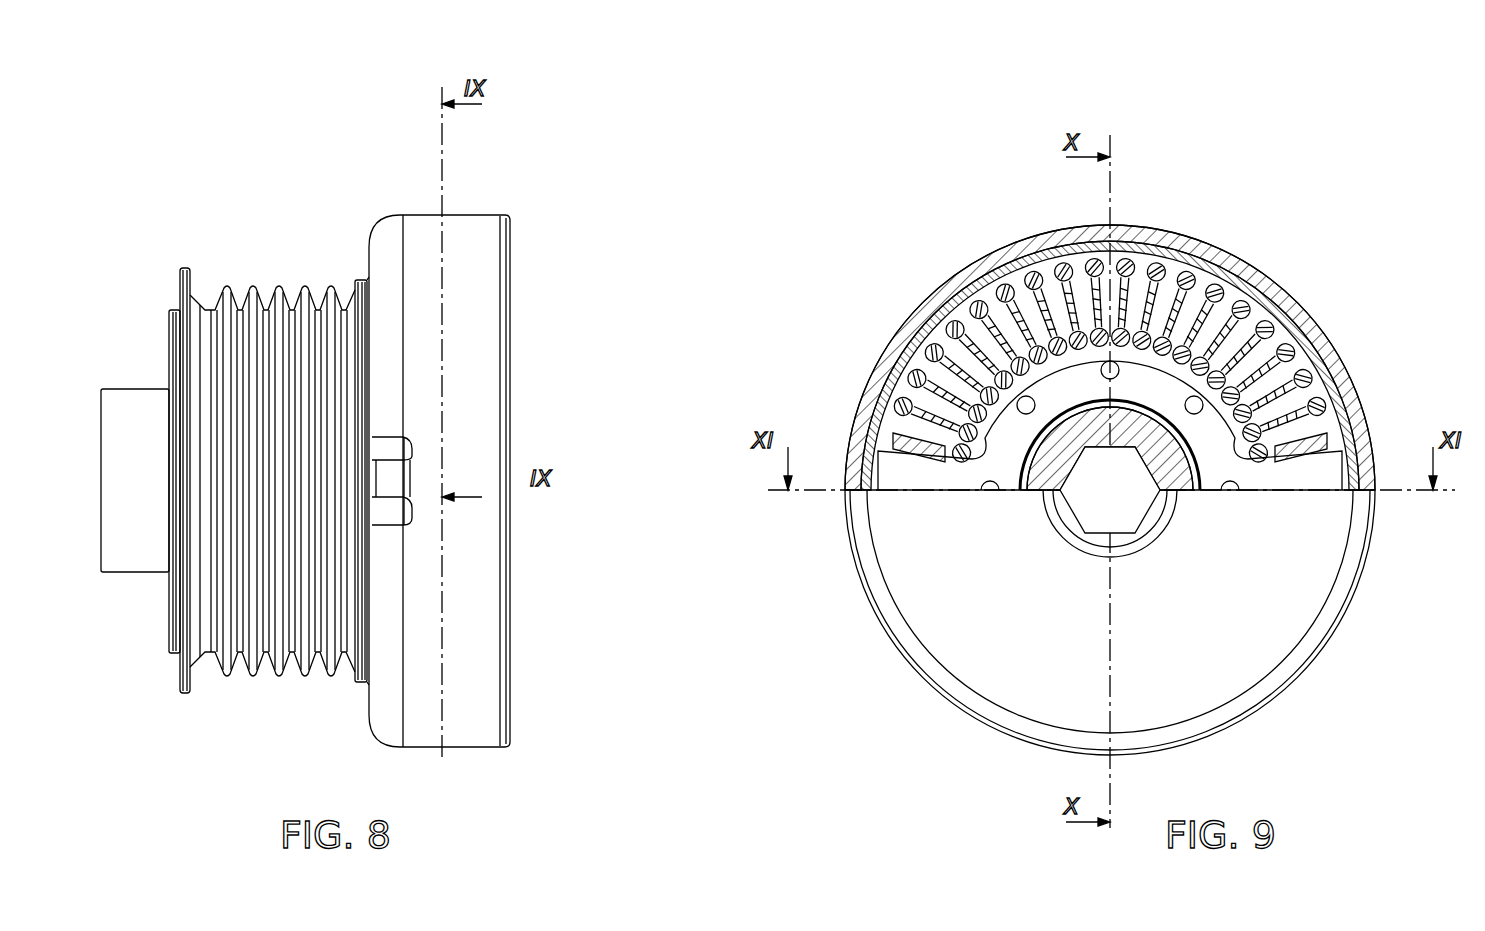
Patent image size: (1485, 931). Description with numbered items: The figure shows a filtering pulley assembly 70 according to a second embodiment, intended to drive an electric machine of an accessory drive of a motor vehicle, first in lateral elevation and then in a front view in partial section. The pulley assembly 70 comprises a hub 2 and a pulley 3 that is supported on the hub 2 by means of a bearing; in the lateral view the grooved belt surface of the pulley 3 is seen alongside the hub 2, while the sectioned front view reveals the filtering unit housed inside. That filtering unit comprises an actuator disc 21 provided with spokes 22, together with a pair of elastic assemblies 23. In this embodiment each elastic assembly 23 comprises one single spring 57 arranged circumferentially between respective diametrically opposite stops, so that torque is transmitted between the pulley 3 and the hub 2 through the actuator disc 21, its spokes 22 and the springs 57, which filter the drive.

In FIG. 8, the hub 2 is at (134, 378).
In FIG. 9, the hub 2 is at (1040, 485).
In FIG. 8, the pulley 3 is at (342, 266).
In FIG. 9, the actuator disc 21 is at (1210, 433).
In FIG. 9, the spokes 22 is at (850, 452).
In FIG. 9, the elastic assemblies 23 is at (1174, 240).
In FIG. 9, the spring 57 is at (927, 310).
In FIG. 8, the pulley assembly 70 is at (367, 178).
In FIG. 9, the pulley assembly 70 is at (1312, 266).